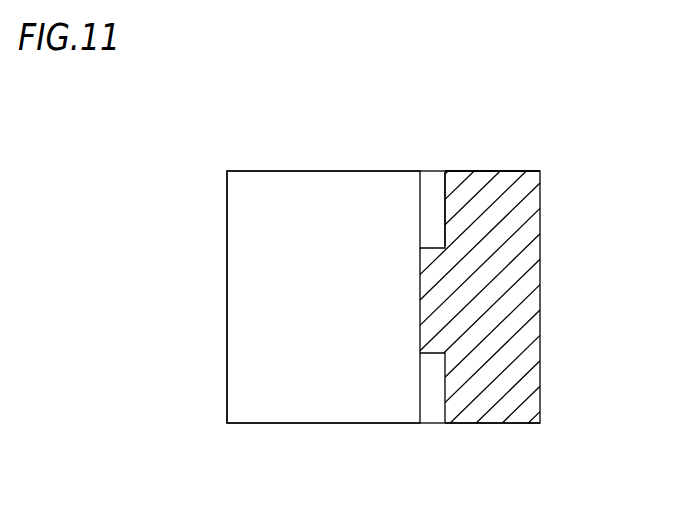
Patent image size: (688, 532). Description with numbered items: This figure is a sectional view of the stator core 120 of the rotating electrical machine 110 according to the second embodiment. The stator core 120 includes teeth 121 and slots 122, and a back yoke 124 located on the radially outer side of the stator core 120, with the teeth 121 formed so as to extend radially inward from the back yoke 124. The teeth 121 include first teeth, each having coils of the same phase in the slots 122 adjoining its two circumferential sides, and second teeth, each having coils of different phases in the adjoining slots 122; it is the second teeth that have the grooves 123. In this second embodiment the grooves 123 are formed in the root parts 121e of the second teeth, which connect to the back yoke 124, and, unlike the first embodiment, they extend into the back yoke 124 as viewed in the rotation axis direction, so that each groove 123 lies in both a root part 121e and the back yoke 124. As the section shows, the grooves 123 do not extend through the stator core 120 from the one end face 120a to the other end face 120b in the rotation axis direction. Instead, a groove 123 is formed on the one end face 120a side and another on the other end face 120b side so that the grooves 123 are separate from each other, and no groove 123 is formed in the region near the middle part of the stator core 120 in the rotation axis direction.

The rotating electrical machine 110 is at (585, 177).
The stator core 120 is at (540, 307).
The one end face 120a is at (525, 171).
The other end face 120b is at (512, 423).
The teeth 121 is at (293, 171).
The root parts 121e is at (444, 240).
The slots 122 is at (320, 228).
The grooves 123 is at (427, 220).
The back yoke 124 is at (495, 171).